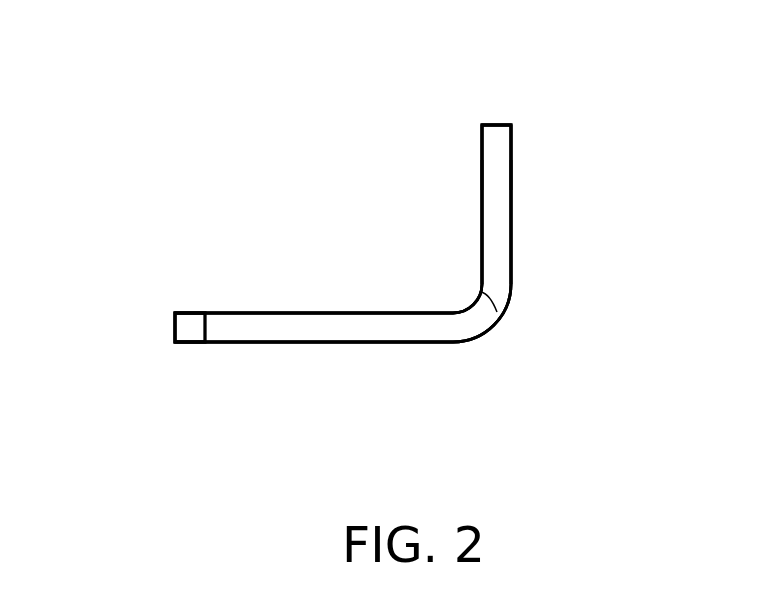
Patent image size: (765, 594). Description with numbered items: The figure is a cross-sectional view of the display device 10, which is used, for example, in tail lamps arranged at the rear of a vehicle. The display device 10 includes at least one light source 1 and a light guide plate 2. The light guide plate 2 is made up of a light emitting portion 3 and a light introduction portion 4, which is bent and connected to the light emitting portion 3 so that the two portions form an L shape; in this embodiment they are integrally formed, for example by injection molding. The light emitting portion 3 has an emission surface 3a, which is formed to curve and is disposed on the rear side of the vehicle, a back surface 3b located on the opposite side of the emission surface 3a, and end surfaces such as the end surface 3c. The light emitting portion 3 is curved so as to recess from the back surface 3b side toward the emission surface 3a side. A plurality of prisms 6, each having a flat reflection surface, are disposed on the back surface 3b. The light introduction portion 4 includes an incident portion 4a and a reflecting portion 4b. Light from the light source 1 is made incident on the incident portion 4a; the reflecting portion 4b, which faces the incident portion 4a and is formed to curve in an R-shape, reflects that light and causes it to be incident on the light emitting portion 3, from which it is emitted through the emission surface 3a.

The light source 1 is at (188, 335).
The light guide plate 2 is at (536, 152).
The light emitting portion 3 is at (515, 213).
The emission surface 3a is at (513, 242).
The back surface 3b is at (482, 218).
The end surface 3c is at (496, 125).
The light introduction portion 4 is at (291, 312).
The incident portion 4a is at (204, 318).
The reflecting portion 4b is at (481, 291).
The prism 6 is at (488, 171).
The display device 10 is at (210, 140).